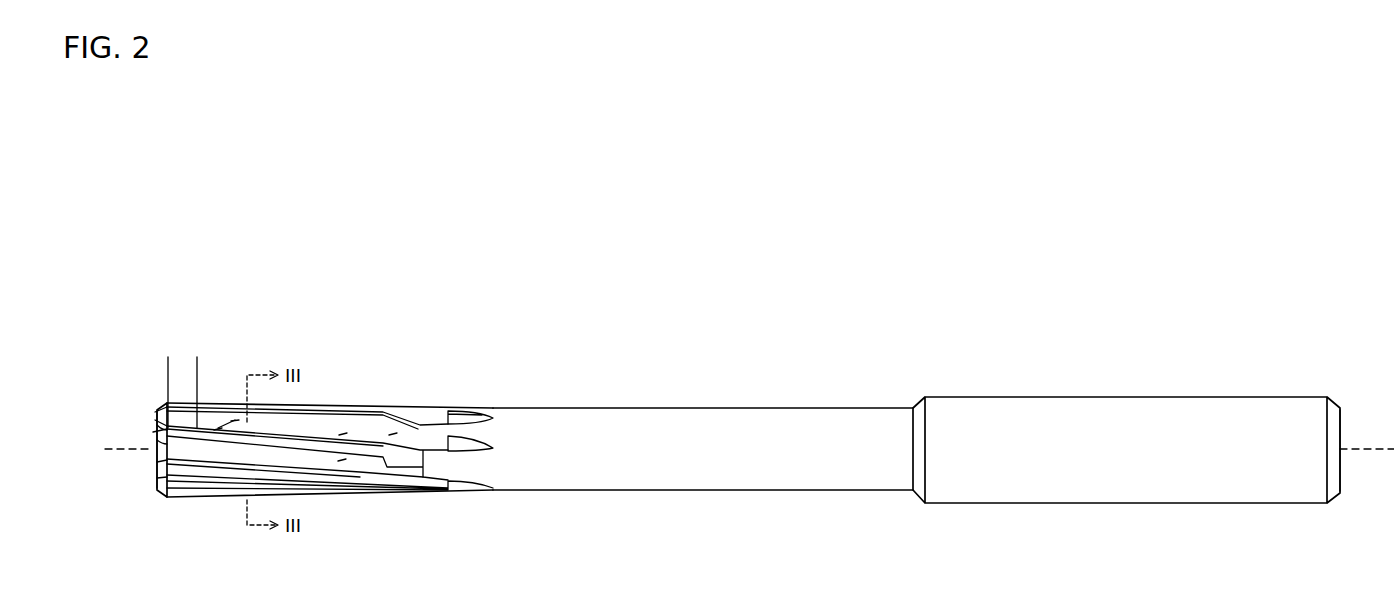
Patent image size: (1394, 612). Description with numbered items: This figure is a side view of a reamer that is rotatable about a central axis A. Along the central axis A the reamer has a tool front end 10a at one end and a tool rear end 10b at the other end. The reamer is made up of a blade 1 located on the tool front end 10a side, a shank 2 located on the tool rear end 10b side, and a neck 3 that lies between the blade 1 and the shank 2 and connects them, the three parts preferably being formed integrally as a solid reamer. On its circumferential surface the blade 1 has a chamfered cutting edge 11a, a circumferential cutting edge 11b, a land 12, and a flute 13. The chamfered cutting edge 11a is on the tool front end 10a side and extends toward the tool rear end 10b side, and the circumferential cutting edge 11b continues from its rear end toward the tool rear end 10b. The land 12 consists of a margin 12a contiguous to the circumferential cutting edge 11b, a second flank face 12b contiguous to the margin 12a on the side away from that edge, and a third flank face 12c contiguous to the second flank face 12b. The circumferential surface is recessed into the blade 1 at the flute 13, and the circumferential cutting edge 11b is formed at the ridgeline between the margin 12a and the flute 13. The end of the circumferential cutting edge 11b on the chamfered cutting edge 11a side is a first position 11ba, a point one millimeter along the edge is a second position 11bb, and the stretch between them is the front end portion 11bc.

The blade 1 is at (157, 545).
The shank 2 is at (1335, 545).
The neck 3 is at (493, 545).
The tool front end 10a is at (155, 477).
The tool rear end 10b is at (1340, 423).
The chamfered cutting edge 11a is at (155, 420).
The circumferential cutting edge 11b is at (342, 460).
The first position 11ba is at (155, 412).
The second position 11bb is at (153, 432).
The front end portion 11bc is at (148, 367).
The land 12 is at (358, 252).
The margin 12a is at (235, 420).
The second flank face 12b is at (218, 428).
The third flank face 12c is at (343, 433).
The flute 13 is at (393, 433).
The central axis A is at (738, 448).